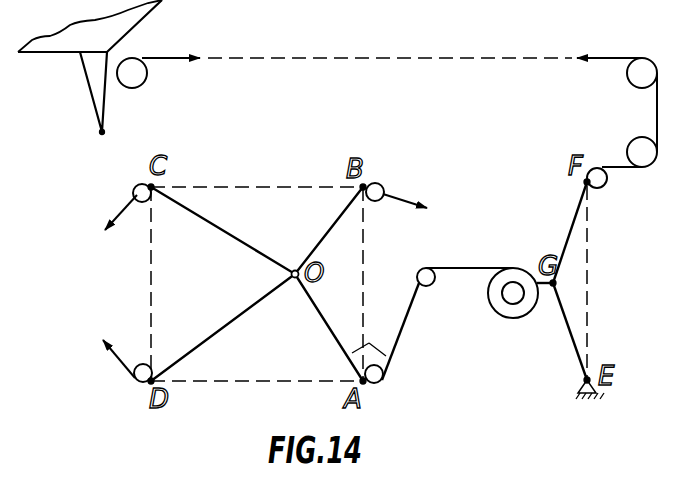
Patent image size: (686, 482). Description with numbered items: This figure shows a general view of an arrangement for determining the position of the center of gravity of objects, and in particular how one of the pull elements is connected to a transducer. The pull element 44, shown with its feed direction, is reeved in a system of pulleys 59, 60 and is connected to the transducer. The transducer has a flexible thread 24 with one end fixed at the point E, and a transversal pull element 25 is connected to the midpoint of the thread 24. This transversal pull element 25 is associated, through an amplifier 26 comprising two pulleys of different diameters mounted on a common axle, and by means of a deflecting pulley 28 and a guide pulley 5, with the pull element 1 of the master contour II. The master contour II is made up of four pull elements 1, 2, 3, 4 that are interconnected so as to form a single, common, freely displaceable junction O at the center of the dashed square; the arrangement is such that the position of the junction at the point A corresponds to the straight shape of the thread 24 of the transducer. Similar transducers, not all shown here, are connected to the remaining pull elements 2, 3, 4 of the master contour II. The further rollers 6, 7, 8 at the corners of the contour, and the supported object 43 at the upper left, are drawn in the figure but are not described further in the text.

The pull element 1 is at (369, 343).
The pull element 2 is at (412, 184).
The pull element 3 is at (119, 202).
The pull element 4 is at (116, 366).
The guide pulley 5 is at (382, 380).
The roller 6 is at (378, 187).
The roller 7 is at (137, 183).
The roller 8 is at (137, 386).
The thread 24 is at (571, 217).
The transversal pull element 25 is at (543, 287).
The amplifier 26 is at (509, 306).
The deflecting pulley 28 is at (426, 282).
The web sheet 43 is at (65, 42).
The pull element 44 is at (162, 57).
The pulley 59 is at (637, 72).
The pulley 60 is at (643, 156).
The master contour II is at (252, 197).